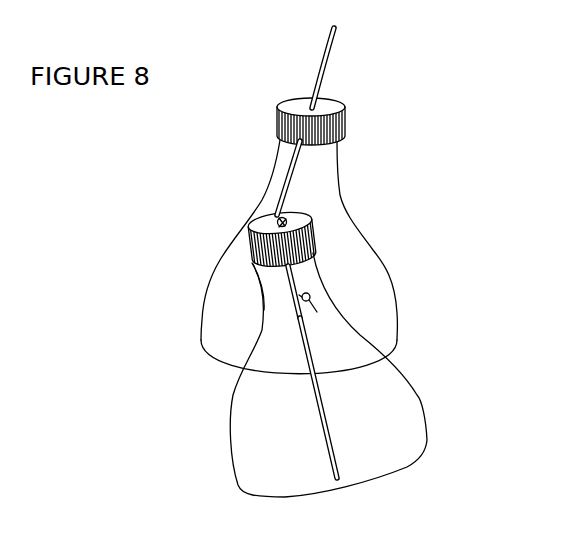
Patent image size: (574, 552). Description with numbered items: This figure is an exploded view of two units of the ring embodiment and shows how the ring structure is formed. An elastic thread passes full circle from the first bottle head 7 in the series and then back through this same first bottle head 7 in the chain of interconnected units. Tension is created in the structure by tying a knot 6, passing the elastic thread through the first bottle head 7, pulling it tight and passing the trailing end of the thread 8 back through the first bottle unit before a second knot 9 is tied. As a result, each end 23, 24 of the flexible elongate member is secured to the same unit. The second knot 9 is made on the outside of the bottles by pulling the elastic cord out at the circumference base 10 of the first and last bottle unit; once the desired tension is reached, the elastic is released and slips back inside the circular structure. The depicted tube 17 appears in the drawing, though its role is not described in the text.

The circumference base 10 is at (415, 469).
The first bottle head 7 is at (240, 263).
The knot 6 is at (262, 227).
The tube 17 is at (298, 185).
The end of the flexible elongate member 24 is at (266, 208).
The trailing end of the thread 8 is at (318, 272).
The second knot 9 is at (325, 295).
The end of the flexible elongate member 23 is at (332, 319).